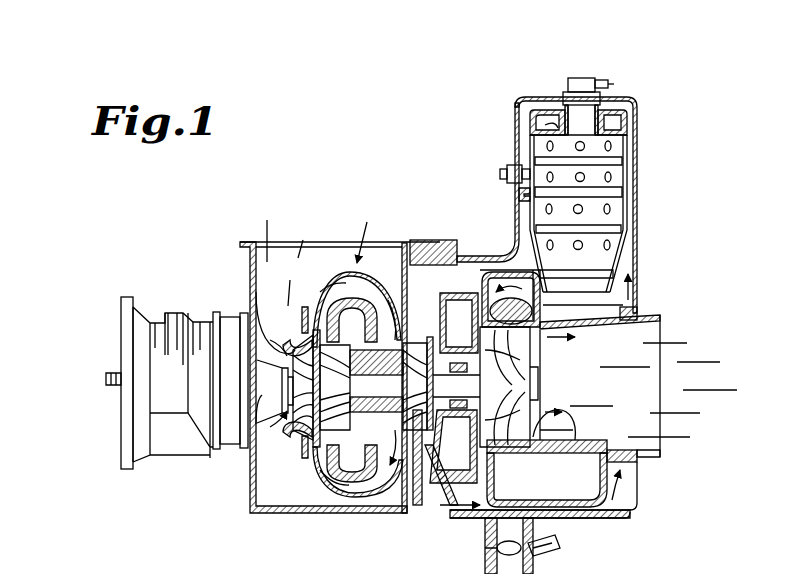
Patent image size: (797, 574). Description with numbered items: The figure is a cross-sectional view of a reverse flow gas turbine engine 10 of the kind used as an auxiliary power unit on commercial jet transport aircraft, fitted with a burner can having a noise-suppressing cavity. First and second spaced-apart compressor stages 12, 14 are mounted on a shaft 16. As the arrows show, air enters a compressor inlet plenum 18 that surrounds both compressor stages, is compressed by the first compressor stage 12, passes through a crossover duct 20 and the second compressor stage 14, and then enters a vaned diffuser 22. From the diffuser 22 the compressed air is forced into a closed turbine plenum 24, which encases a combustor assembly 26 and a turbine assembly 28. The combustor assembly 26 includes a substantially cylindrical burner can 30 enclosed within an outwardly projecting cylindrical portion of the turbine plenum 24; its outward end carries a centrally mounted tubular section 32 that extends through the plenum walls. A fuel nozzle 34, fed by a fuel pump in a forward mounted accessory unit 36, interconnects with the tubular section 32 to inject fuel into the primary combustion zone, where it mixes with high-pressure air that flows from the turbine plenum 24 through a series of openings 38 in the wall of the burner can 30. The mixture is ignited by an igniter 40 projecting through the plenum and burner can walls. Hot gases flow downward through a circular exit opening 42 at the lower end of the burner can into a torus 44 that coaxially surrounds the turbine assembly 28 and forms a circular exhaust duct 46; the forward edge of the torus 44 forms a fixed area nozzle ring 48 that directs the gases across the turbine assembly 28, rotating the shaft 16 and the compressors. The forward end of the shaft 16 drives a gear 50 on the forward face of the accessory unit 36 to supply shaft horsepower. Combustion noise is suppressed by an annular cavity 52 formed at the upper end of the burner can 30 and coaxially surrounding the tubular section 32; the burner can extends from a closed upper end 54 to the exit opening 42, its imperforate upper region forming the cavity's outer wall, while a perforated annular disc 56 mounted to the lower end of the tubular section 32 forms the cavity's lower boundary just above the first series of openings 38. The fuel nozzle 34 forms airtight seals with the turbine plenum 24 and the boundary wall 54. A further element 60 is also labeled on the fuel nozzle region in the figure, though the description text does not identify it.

The gas turbine engine 10 is at (358, 213).
The first compressor stage 12 is at (250, 297).
The second compressor stage 14 is at (402, 510).
The shaft 16 is at (370, 385).
The compressor inlet plenum 18 is at (280, 250).
The crossover duct 20 is at (347, 282).
The vaned diffuser 22 is at (435, 240).
The turbine plenum 24 is at (474, 256).
The combustor assembly 26 is at (596, 262).
The turbine assembly 28 is at (600, 450).
The burner can 30 is at (618, 150).
The tubular section 32 is at (608, 113).
The fuel nozzle 34 is at (580, 100).
The accessory unit 36 is at (122, 330).
The openings 38 is at (575, 212).
The igniter 40 is at (506, 170).
The circular exit opening 42 is at (592, 293).
The torus 44 is at (600, 313).
The exhaust duct 46 is at (655, 385).
The nozzle ring 48 is at (500, 301).
The gear 50 is at (106, 379).
The annular cavity 52 is at (613, 123).
The closed upper end 54 is at (632, 99).
The perforated annular disc 56 is at (542, 128).
The fuel line 60 is at (584, 92).